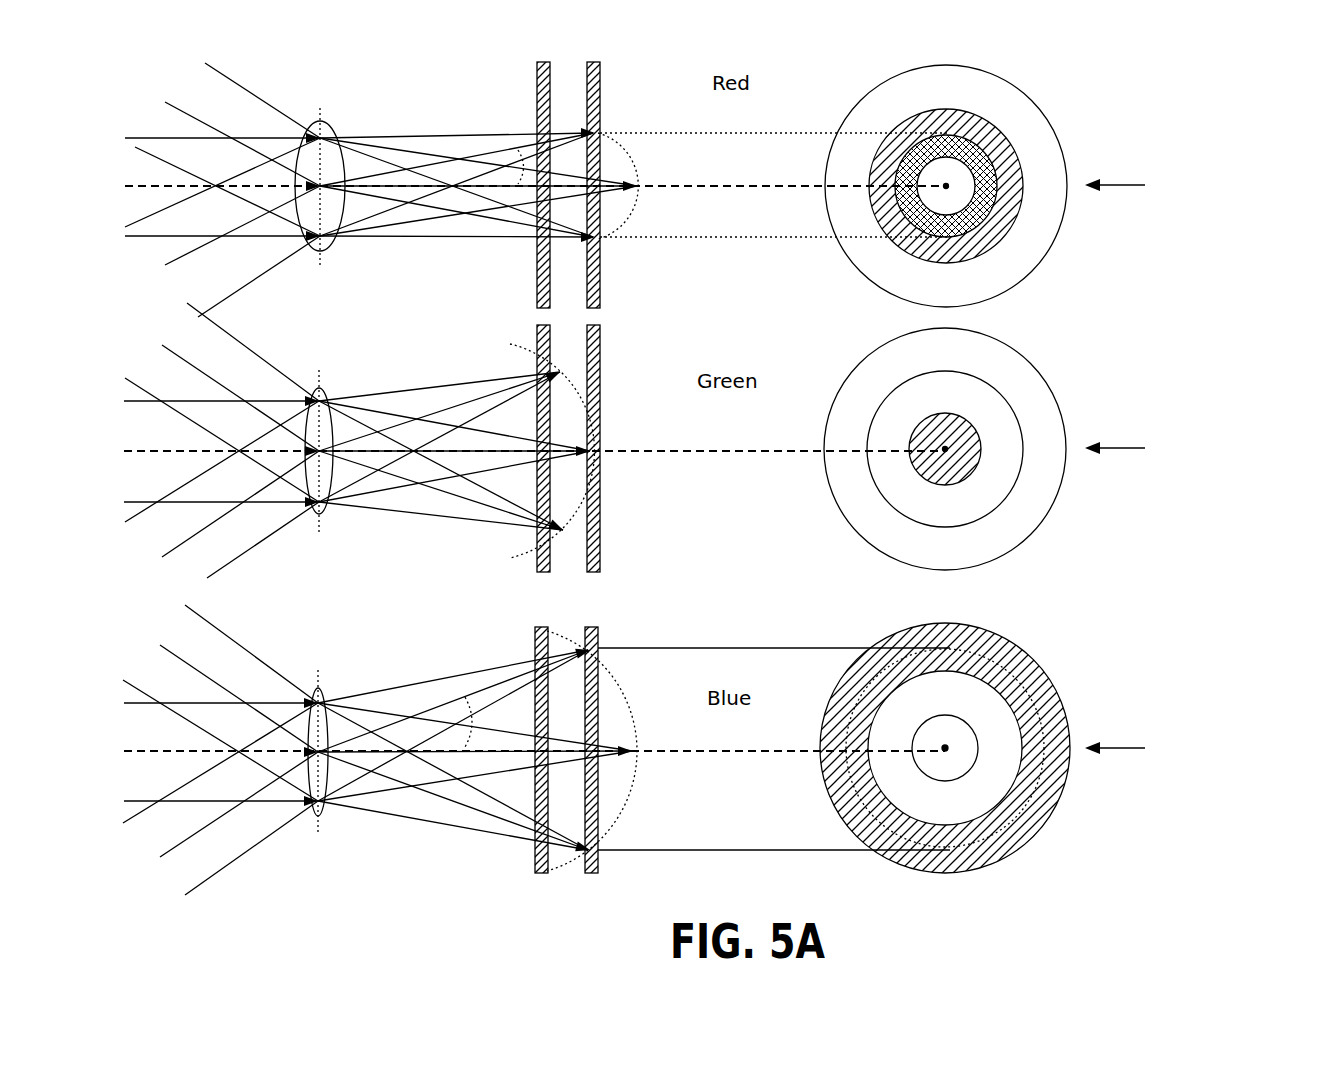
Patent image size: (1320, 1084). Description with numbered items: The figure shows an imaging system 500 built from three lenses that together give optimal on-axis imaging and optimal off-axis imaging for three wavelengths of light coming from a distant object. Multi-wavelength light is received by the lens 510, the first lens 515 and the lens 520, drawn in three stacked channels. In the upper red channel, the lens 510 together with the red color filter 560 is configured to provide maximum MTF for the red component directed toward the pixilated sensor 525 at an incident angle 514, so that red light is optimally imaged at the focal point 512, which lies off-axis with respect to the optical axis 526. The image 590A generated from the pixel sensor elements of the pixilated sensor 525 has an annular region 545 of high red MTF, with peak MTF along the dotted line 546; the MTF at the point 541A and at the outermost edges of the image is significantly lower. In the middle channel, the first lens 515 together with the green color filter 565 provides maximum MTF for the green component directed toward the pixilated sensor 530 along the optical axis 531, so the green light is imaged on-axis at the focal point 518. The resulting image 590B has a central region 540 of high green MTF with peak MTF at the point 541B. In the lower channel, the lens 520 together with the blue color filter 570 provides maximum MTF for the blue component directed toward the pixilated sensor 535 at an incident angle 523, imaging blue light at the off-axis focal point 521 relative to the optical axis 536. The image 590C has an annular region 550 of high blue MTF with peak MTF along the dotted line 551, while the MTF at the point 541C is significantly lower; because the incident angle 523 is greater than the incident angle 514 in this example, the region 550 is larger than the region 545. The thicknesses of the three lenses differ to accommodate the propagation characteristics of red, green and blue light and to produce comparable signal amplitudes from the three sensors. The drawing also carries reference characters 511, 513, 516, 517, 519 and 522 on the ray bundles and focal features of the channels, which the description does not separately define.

The imaging system 500 is at (1178, 86).
The lens 510 is at (332, 120).
The red converging rays 511 is at (516, 147).
The focal point 512 is at (597, 130).
The red on-axis focal point 513 is at (640, 178).
The incident angle 514 is at (562, 172).
The first lens 515 is at (332, 400).
The green converging rays 516 is at (445, 418).
The green upper focal point 517 is at (563, 366).
The focal point 518 is at (601, 447).
The blue converging rays 519 is at (430, 704).
The lens 520 is at (328, 700).
The focal point 521 is at (605, 652).
The blue on-axis focal point 522 is at (640, 742).
The incident angle 523 is at (474, 716).
The pixilated sensor 525 is at (596, 66).
The optical axis 526 is at (748, 186).
The pixilated sensor 530 is at (601, 362).
The optical axis 531 is at (722, 450).
The pixilated sensor 535 is at (598, 628).
The optical axis 536 is at (738, 750).
The region 540 is at (936, 423).
The point 541A is at (946, 193).
The point 541B is at (946, 458).
The point 541C is at (946, 757).
The region 545 is at (948, 118).
The dotted line 546 is at (980, 122).
The region 550 is at (980, 628).
The dotted line 551 is at (1023, 670).
The red color filter 560 is at (537, 96).
The green color filter 565 is at (538, 323).
The blue color filter 570 is at (545, 626).
The image 590A is at (1144, 186).
The image 590B is at (1151, 450).
The image 590C is at (1151, 750).